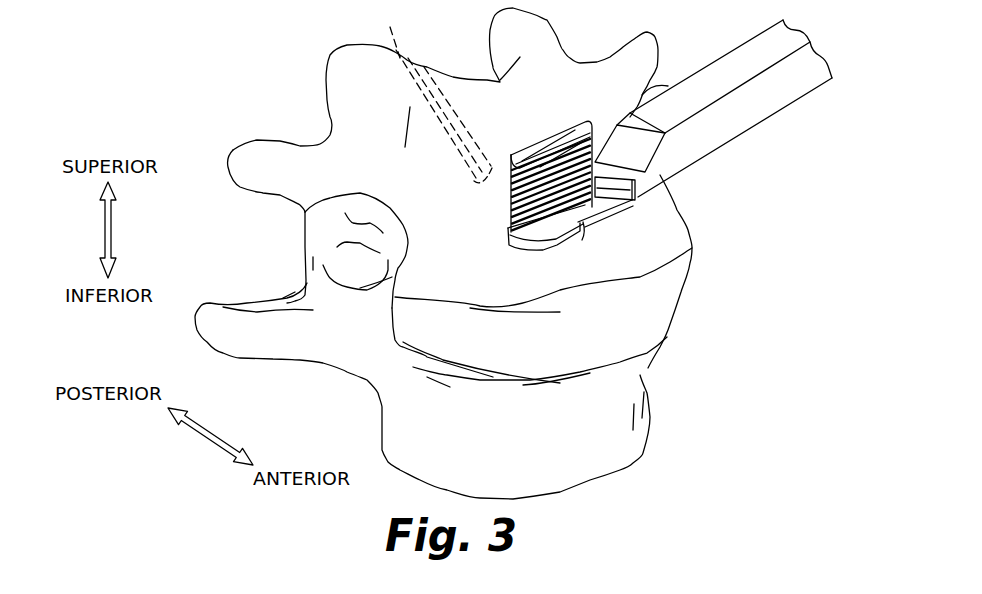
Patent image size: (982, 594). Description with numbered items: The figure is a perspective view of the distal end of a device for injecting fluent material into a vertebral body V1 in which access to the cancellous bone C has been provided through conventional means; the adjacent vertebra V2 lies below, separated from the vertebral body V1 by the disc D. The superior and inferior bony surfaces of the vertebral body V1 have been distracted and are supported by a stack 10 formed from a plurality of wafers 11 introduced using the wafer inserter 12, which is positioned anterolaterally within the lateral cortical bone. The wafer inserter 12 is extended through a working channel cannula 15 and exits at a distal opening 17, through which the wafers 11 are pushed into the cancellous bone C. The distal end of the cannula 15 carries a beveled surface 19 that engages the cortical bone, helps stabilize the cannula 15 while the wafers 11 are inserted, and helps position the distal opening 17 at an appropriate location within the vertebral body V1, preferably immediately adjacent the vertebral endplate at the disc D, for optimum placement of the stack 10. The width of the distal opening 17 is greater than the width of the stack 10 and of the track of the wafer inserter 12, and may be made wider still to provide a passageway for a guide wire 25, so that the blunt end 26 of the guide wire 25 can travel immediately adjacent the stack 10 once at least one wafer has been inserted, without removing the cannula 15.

The stack 10 is at (514, 148).
The wafers 11 is at (510, 205).
The wafer inserter 12 is at (512, 248).
The working channel cannula 15 is at (770, 99).
The distal opening 17 is at (628, 212).
The beveled surface 19 is at (630, 145).
The guide wire 25 is at (600, 207).
The blunt end 26 is at (568, 228).
The cancellous bone C is at (440, 91).
The disc D is at (643, 320).
The vertebral body V1 is at (668, 233).
The lower vertebra V2 is at (623, 455).